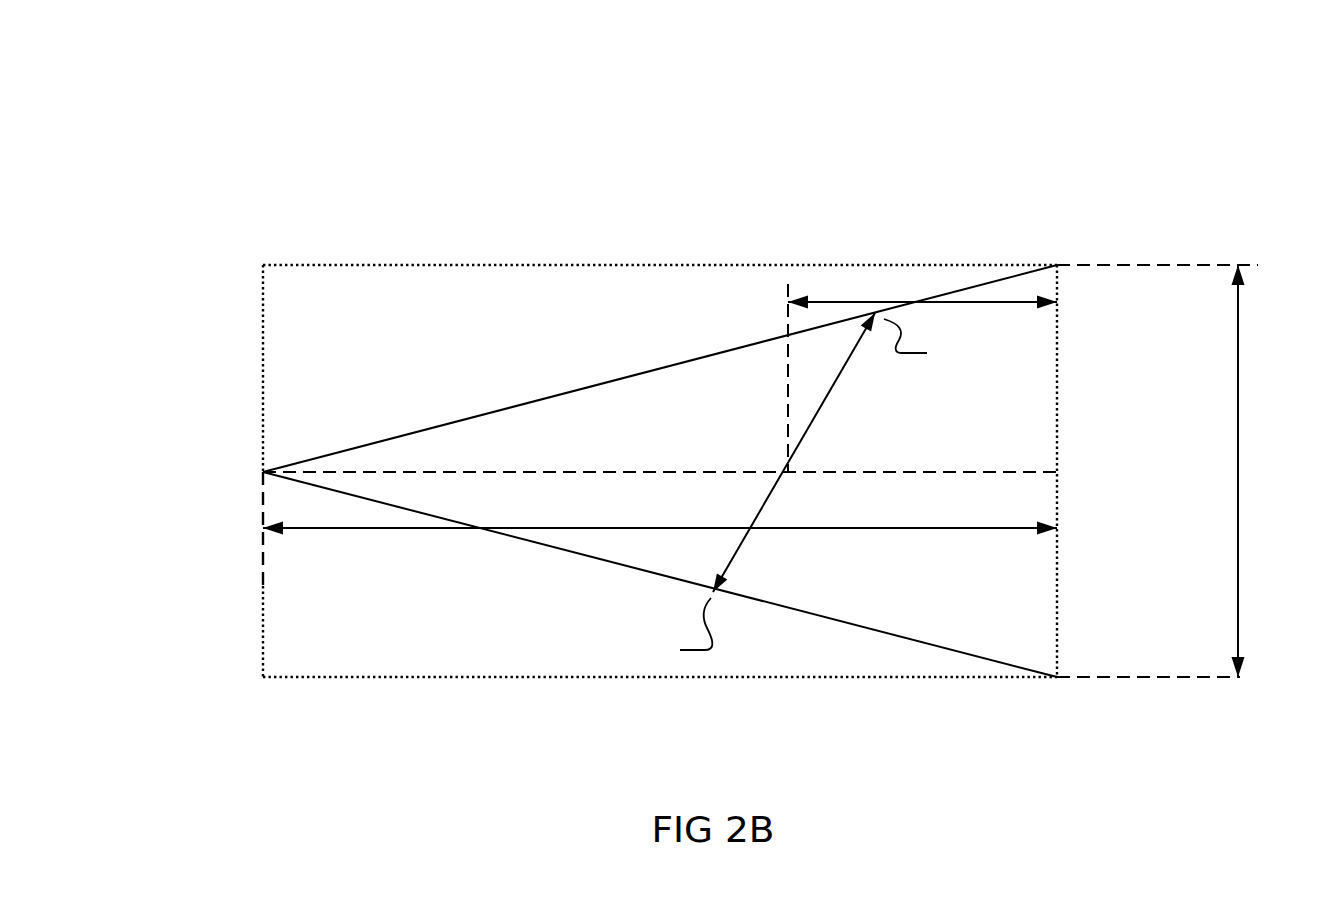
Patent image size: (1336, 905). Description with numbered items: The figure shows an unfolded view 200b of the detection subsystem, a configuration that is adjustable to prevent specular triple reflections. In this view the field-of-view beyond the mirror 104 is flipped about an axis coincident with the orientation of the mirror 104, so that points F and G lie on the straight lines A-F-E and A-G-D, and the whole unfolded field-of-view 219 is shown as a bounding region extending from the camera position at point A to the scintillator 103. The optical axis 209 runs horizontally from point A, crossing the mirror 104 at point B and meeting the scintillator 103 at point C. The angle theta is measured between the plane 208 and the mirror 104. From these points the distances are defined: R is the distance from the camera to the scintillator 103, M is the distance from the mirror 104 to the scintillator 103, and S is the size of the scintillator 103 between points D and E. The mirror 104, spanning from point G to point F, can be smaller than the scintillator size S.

The unfolded view 200b is at (163, 100).
The unfolded field-of-view 219 is at (376, 265).
The scintillator 103 is at (1059, 387).
The optical axis 209 is at (618, 470).
The plane 208 is at (784, 322).
The mirror 104 is at (752, 534).